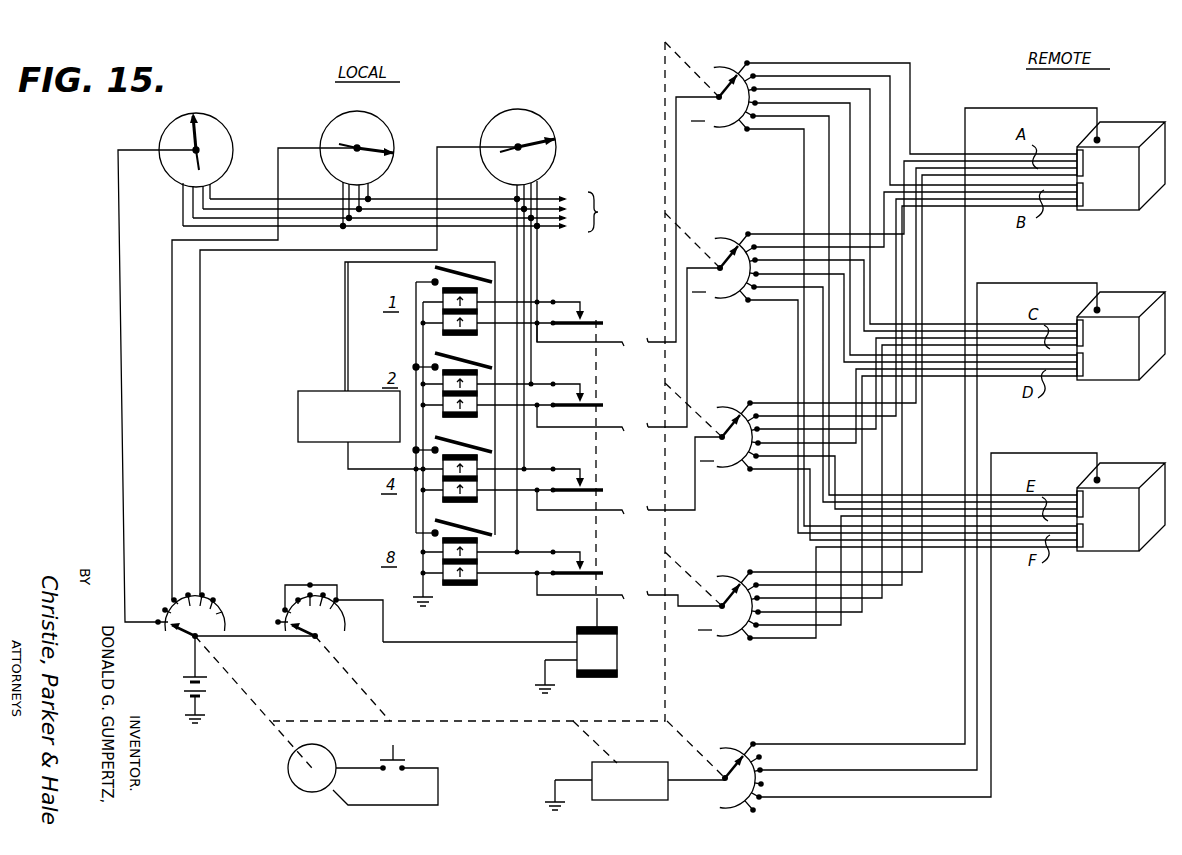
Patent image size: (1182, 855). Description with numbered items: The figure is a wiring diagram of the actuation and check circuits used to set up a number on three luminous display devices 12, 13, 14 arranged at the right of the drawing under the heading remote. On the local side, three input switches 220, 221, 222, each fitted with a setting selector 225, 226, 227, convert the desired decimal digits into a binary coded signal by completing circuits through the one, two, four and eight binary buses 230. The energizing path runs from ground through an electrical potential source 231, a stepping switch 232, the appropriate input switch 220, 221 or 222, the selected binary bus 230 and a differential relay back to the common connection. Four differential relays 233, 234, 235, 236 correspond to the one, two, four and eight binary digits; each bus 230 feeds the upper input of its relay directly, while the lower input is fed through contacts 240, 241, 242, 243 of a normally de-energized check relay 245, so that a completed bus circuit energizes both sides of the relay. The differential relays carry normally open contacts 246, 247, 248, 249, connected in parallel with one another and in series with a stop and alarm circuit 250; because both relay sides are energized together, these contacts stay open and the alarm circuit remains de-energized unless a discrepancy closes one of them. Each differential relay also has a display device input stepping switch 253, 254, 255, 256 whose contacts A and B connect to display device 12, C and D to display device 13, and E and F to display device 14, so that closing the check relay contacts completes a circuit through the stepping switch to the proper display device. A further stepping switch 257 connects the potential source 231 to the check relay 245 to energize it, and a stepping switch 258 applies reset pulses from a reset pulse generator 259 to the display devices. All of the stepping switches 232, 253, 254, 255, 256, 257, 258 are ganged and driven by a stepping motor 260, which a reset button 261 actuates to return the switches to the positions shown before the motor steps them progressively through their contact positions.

The luminous display device 12 is at (1142, 212).
The luminous display device 13 is at (1122, 382).
The luminous display device 14 is at (1122, 558).
The input switch 220 is at (150, 132).
The input switch 221 is at (312, 116).
The input switch 222 is at (480, 110).
The setting selector 225 is at (192, 156).
The setting selector 226 is at (350, 152).
The setting selector 227 is at (510, 150).
The binary buses 230 is at (409, 213).
The electrical potential source 231 is at (210, 682).
The stepping switch 232 is at (228, 614).
The differential relay 233 is at (435, 282).
The differential relay 234 is at (478, 382).
The differential relay 235 is at (478, 467).
The differential relay 236 is at (478, 550).
The check relay contact 240 is at (598, 322).
The check relay contact 241 is at (600, 412).
The check relay contact 242 is at (602, 498).
The check relay contact 243 is at (604, 582).
The check relay 245 is at (617, 650).
The relay contact 246 is at (466, 272).
The relay contact 247 is at (448, 345).
The relay contact 248 is at (416, 450).
The relay contact 249 is at (416, 533).
The stop and alarm circuit 250 is at (318, 442).
The display device input stepping switch 253 is at (722, 126).
The display device input stepping switch 254 is at (728, 236).
The display device input stepping switch 255 is at (733, 416).
The display device input stepping switch 256 is at (733, 584).
The stepping switch 257 is at (340, 626).
The stepping switch 258 is at (741, 750).
The reset pulse generator 259 is at (636, 762).
The stepping motor 260 is at (336, 762).
The reset button 261 is at (398, 752).